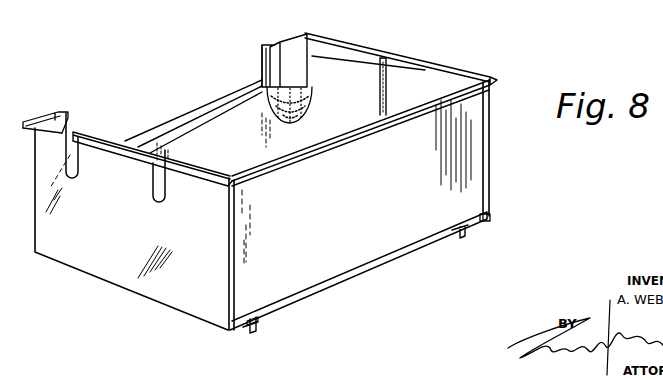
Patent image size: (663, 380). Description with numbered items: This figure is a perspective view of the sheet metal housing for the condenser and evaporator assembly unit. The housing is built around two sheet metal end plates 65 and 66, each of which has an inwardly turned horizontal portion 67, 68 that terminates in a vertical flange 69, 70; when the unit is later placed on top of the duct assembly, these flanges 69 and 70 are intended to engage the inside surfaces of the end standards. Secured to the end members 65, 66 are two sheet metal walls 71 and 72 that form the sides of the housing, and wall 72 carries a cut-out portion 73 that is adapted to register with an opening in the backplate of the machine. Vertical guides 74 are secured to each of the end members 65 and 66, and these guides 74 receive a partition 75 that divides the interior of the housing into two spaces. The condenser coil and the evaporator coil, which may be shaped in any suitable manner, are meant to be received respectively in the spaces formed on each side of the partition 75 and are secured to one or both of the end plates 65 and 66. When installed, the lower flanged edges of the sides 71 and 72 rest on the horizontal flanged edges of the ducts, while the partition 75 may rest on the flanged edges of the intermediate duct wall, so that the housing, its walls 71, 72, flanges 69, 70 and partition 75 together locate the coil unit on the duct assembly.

The sheet metal end plate 65 is at (431, 79).
The sheet metal end plate 66 is at (167, 296).
The inwardly turned horizontal portion 67 is at (476, 222).
The inwardly turned horizontal portion 68 is at (244, 330).
The vertical flange 69 is at (457, 231).
The vertical flange 70 is at (258, 324).
The sheet metal wall 71 is at (362, 247).
The sheet metal wall 72 is at (290, 50).
The cut-out portion 73 is at (278, 65).
The vertical guide 74 is at (386, 62).
The partition 75 is at (352, 70).